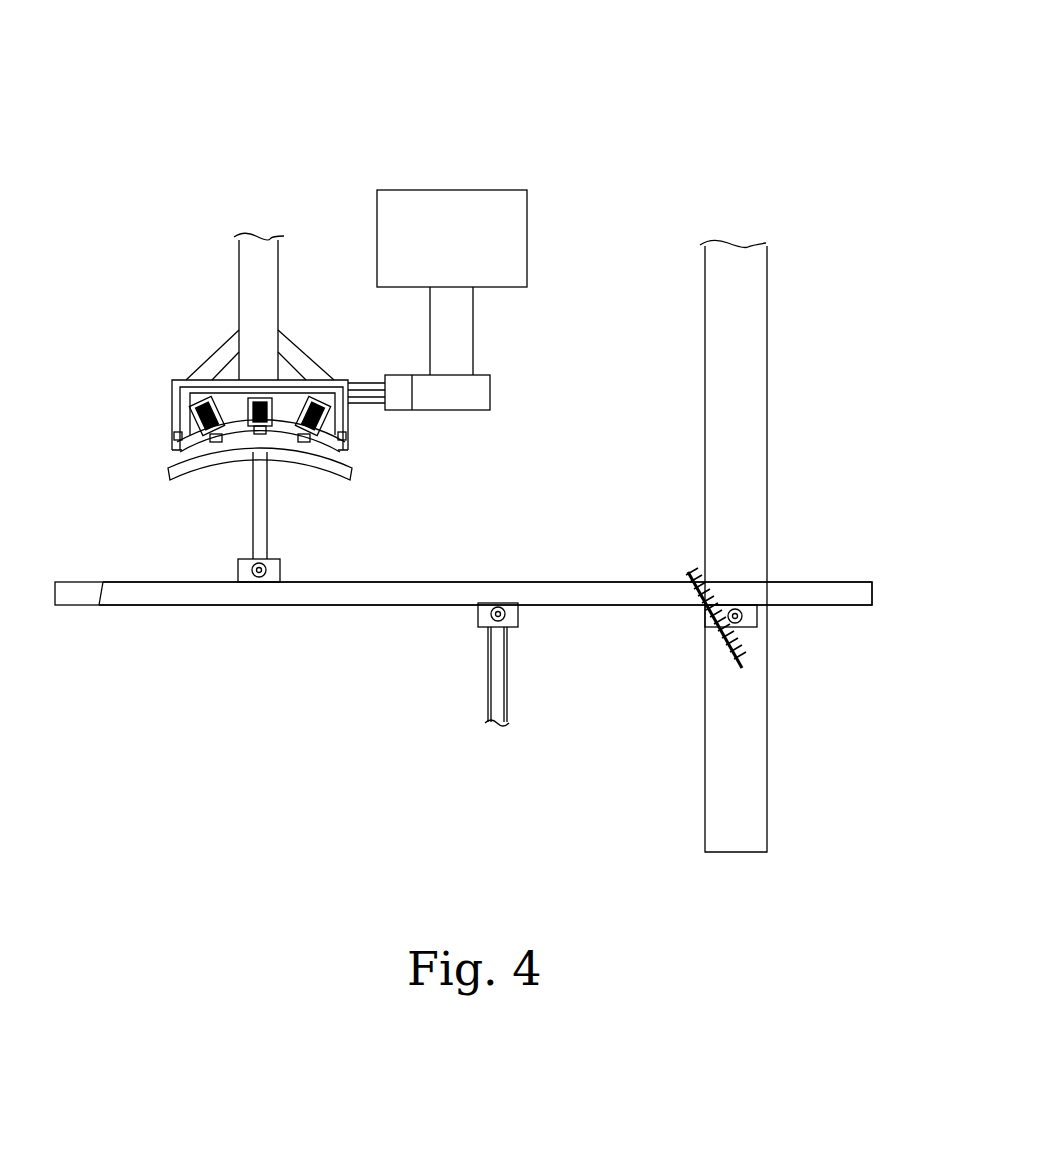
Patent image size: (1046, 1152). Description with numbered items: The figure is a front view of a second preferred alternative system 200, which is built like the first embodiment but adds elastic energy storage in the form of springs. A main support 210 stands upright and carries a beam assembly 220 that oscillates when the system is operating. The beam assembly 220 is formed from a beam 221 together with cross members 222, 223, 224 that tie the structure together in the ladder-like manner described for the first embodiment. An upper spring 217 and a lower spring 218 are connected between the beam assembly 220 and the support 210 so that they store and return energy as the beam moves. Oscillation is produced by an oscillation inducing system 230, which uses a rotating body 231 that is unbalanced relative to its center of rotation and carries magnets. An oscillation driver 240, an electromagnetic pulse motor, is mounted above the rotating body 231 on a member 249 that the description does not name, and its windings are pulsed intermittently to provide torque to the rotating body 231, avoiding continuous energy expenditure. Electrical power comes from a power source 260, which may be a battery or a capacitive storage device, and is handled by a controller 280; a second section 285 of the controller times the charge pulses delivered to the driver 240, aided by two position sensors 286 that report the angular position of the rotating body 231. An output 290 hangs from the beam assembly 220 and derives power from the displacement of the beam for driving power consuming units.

The system 200 is at (730, 77).
The support 210 is at (704, 364).
The upper spring 217 is at (703, 565).
The lower spring 218 is at (707, 648).
The beam assembly 220 is at (368, 618).
The beam 221 is at (188, 605).
The cross member 222 is at (77, 605).
The cross member 223 is at (522, 617).
The cross member 224 is at (238, 580).
The oscillation inducing system 230 is at (248, 503).
The rotating body 231 is at (347, 474).
The oscillation driver 240 is at (160, 397).
The shaft 249 is at (239, 298).
The power source 260 is at (452, 190).
The controller 280 is at (458, 410).
The second section of controller 285 is at (398, 375).
The position sensor 286 is at (172, 441).
The output 290 is at (528, 690).